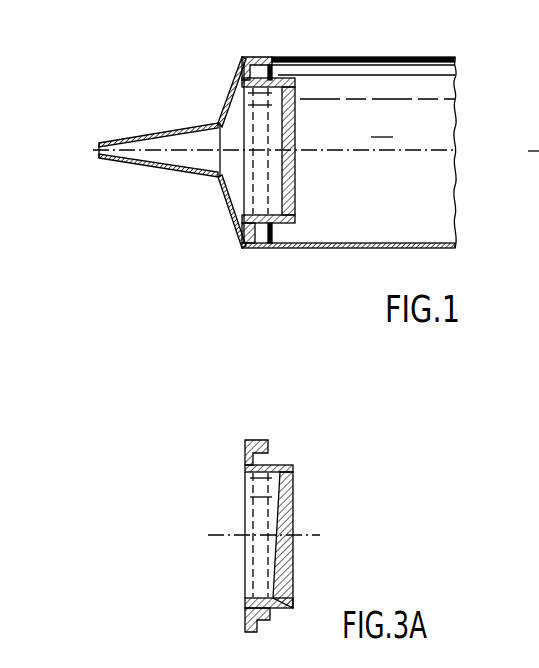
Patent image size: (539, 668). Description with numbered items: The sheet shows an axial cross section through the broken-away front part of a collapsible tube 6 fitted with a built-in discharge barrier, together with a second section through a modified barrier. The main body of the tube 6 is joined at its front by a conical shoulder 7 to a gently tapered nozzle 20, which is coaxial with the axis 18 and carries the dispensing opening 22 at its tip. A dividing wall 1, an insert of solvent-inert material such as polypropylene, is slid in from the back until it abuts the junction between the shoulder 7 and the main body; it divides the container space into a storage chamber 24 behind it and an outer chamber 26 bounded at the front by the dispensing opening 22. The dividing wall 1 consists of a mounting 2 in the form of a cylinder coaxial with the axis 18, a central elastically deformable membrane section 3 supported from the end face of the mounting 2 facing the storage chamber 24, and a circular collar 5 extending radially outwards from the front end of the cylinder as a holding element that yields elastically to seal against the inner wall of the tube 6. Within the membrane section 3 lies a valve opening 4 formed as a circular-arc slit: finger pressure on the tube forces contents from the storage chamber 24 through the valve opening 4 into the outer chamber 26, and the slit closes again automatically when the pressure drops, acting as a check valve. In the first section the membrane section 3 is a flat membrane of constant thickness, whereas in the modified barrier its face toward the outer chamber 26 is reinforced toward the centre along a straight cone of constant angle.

In FIG. 1, the dividing wall 1 is at (239, 79).
In FIG. 1, the mounting 2 is at (273, 77).
In FIG. 3A, the mounting 2 is at (278, 468).
In FIG. 1, the membrane section 3 is at (292, 130).
In FIG. 3A, the membrane section 3 is at (293, 517).
In FIG. 1, the valve opening 4 is at (293, 218).
In FIG. 3A, the valve opening 4 is at (290, 477).
In FIG. 1, the circular collar 5 is at (252, 60).
In FIG. 1, the tube 6 is at (418, 54).
In FIG. 1, the container shoulder 7 is at (232, 218).
In FIG. 1, the axis 18 is at (443, 148).
In FIG. 3A, the axis 18 is at (226, 532).
In FIG. 1, the nozzle 20 is at (173, 172).
In FIG. 1, the dispensing opening 22 is at (98, 147).
In FIG. 1, the storage chamber 24 is at (382, 126).
In FIG. 1, the outer chamber 26 is at (233, 158).